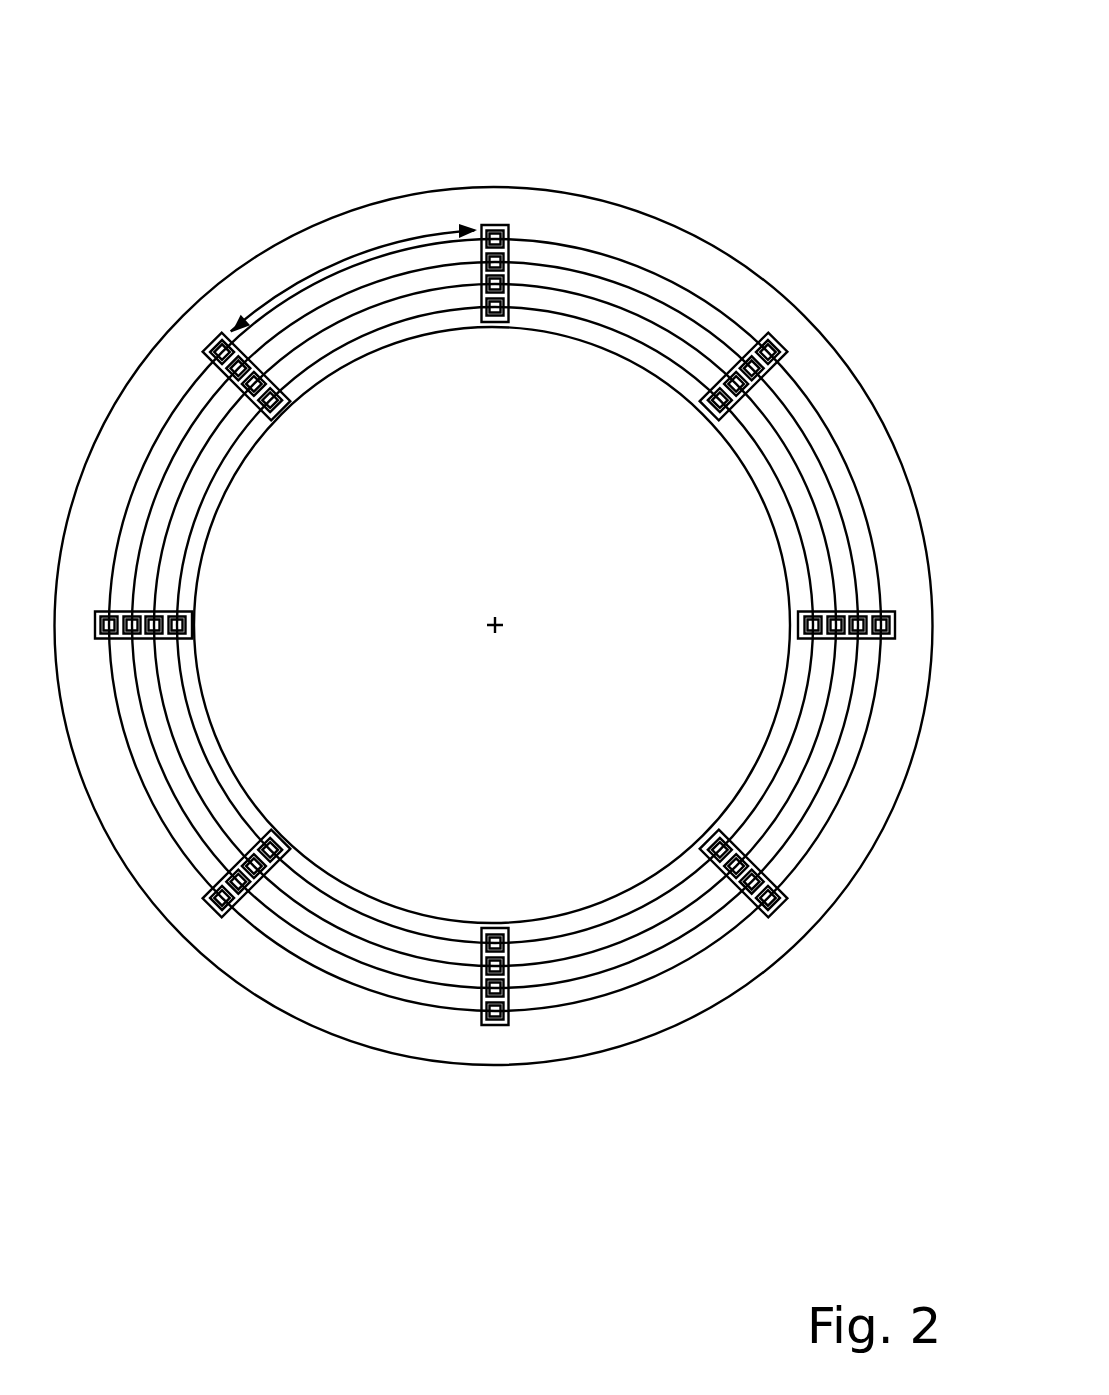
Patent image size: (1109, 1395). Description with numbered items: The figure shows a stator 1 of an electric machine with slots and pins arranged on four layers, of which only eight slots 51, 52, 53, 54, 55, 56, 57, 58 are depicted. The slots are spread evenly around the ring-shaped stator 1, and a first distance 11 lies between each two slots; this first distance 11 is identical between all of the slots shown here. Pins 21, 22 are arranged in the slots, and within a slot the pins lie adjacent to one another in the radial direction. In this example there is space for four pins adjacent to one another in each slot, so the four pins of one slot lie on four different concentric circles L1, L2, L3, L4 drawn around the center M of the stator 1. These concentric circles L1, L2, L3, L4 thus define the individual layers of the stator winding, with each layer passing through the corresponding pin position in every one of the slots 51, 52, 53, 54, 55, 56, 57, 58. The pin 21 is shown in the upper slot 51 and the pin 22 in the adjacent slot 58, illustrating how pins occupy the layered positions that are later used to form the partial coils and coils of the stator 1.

The stator 1 is at (583, 55).
The first distance 11 is at (312, 273).
The pin 21 is at (482, 283).
The pin 22 is at (273, 405).
The slot 51 is at (471, 363).
The slot 52 is at (783, 327).
The slot 53 is at (792, 621).
The slot 54 is at (708, 837).
The slot 55 is at (505, 1028).
The slot 56 is at (283, 838).
The slot 57 is at (192, 627).
The slot 58 is at (274, 460).
The center M is at (508, 637).
The concentric circle L1 is at (283, 943).
The concentric circle L2 is at (330, 947).
The concentric circle L3 is at (387, 950).
The concentric circle L4 is at (442, 937).